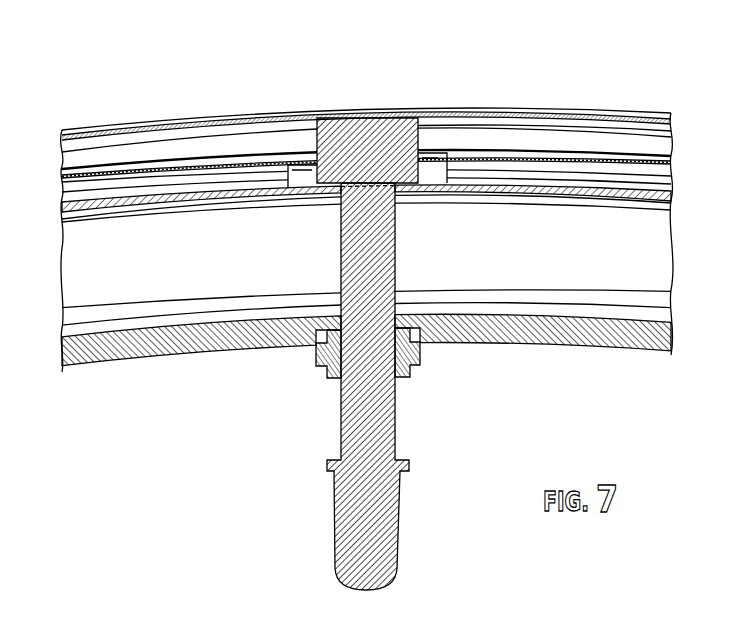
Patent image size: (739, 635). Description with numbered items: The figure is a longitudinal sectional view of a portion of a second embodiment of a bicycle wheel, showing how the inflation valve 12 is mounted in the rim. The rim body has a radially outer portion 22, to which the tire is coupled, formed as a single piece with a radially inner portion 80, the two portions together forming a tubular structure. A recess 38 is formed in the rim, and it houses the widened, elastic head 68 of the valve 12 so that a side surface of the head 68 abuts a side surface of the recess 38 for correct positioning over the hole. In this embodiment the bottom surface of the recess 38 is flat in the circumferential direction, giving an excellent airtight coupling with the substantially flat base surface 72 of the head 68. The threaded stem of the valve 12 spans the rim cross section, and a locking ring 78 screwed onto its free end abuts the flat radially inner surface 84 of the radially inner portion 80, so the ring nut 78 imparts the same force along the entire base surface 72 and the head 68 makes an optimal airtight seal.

The recess 38 is at (321, 104).
The head 68 is at (372, 117).
The radially outer portion 22 is at (484, 186).
The base surface 72 is at (336, 194).
The locking ring 78 is at (316, 356).
The radially inner surface 84 is at (420, 343).
The radially inner portion 80 is at (492, 337).
The valve 12 is at (341, 440).